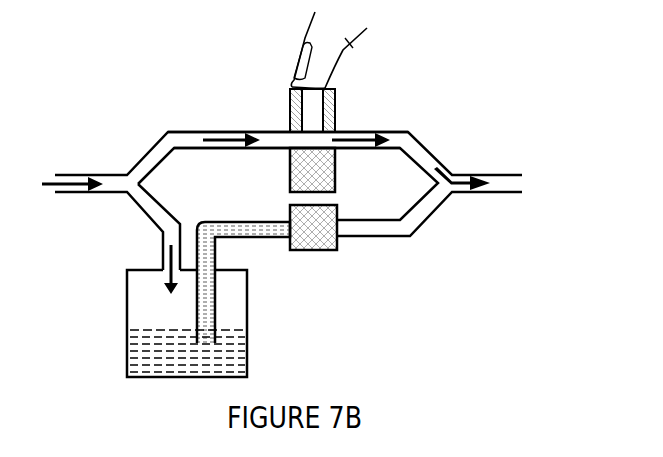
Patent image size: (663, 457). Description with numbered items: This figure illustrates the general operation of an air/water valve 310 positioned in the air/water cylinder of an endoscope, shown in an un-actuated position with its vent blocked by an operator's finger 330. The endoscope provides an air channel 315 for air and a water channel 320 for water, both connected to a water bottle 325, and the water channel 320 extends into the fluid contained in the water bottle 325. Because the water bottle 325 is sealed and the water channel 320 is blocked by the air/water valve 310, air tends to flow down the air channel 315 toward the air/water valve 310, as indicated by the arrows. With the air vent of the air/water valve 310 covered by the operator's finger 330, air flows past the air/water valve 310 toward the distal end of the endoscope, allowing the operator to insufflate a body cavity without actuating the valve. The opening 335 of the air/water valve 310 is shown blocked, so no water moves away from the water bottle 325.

The air/water valve 310 is at (336, 110).
The air channel 315 is at (220, 130).
The water channel 320 is at (265, 238).
The water bottle 325 is at (247, 345).
The operator's finger 330 is at (325, 40).
The opening 335 is at (288, 198).